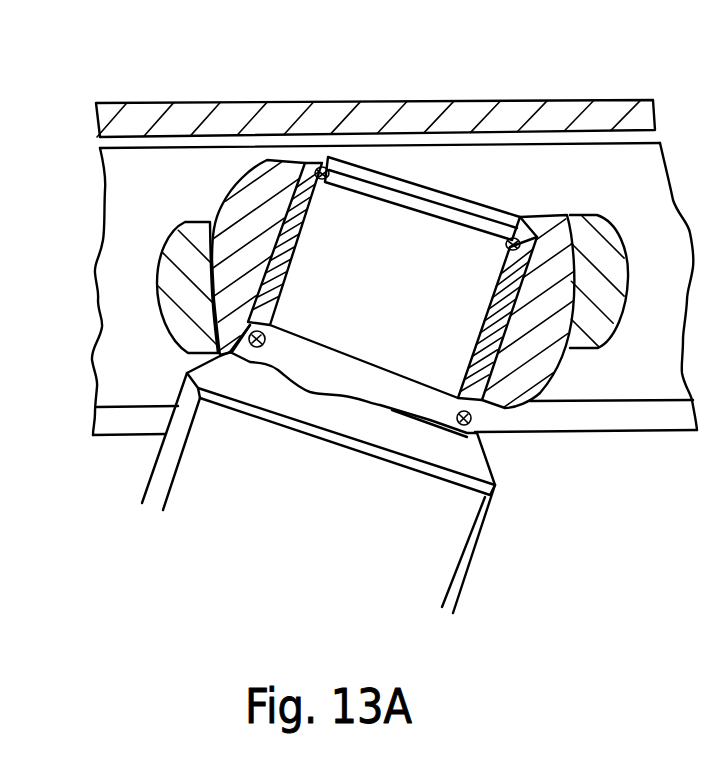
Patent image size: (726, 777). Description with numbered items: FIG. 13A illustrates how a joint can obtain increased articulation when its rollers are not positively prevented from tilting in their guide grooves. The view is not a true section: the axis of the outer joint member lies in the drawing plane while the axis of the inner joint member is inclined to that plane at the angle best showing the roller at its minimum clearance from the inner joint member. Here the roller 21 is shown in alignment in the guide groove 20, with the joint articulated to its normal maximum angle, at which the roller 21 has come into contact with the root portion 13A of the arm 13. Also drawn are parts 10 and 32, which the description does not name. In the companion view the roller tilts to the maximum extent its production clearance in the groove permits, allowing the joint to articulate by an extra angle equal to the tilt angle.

The plate 10 is at (516, 104).
The guide groove 20 is at (530, 172).
The roller 21 is at (177, 235).
The arm 13 is at (392, 238).
The cartridge wall 32 is at (282, 272).
The root portion 13A is at (473, 466).